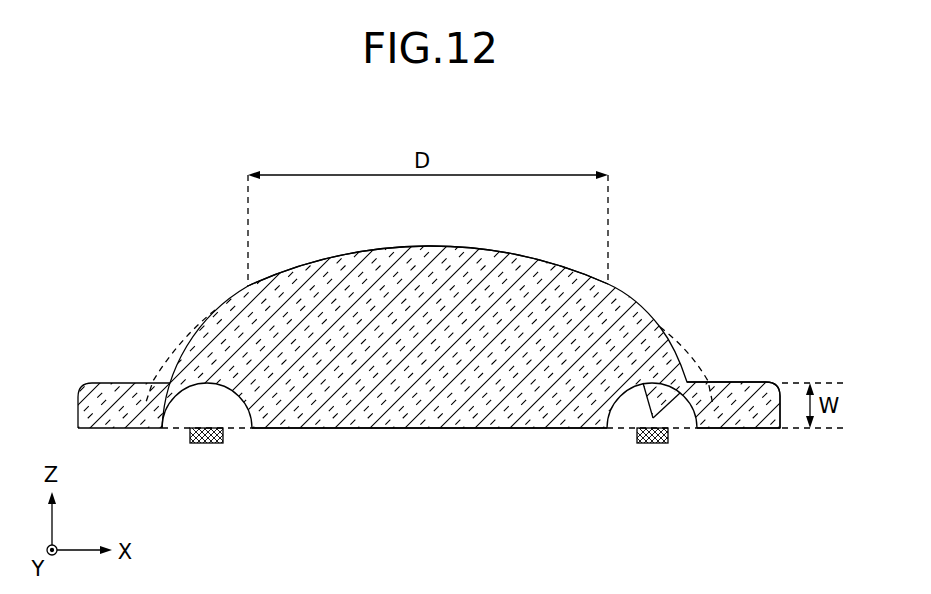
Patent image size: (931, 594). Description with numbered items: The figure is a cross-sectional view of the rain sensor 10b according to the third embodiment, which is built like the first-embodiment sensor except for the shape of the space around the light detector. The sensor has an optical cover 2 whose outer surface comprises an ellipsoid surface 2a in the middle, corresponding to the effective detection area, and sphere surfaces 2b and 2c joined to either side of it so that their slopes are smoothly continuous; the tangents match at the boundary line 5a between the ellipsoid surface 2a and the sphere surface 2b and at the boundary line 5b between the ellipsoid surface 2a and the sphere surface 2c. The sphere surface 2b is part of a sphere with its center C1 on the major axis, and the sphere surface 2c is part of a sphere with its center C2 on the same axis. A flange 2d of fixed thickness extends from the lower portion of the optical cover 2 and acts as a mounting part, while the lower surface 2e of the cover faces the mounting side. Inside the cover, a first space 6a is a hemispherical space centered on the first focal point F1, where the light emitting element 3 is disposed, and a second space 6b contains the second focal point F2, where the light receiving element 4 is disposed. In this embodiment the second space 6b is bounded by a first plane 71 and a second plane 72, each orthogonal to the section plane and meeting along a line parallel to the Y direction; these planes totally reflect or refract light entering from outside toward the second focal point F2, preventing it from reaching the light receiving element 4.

The rain sensor 10b is at (176, 208).
The optical cover 2 is at (538, 254).
The ellipsoid surface 2a is at (327, 260).
The sphere surface 2b is at (197, 323).
The sphere surface 2c is at (661, 324).
The flange 2d is at (747, 382).
The lens bottom surface 2e is at (430, 428).
The boundary line 5a is at (247, 278).
The boundary line 5b is at (610, 278).
The first space 6a is at (178, 415).
The second space 6b is at (672, 415).
The light emitting element 3 is at (200, 443).
The light receiving element 4 is at (658, 445).
The first focal point F1 is at (222, 445).
The second focal point F2 is at (641, 430).
The center C1 is at (328, 436).
The center C2 is at (536, 436).
The first plane 71 is at (679, 398).
The second plane 72 is at (645, 393).